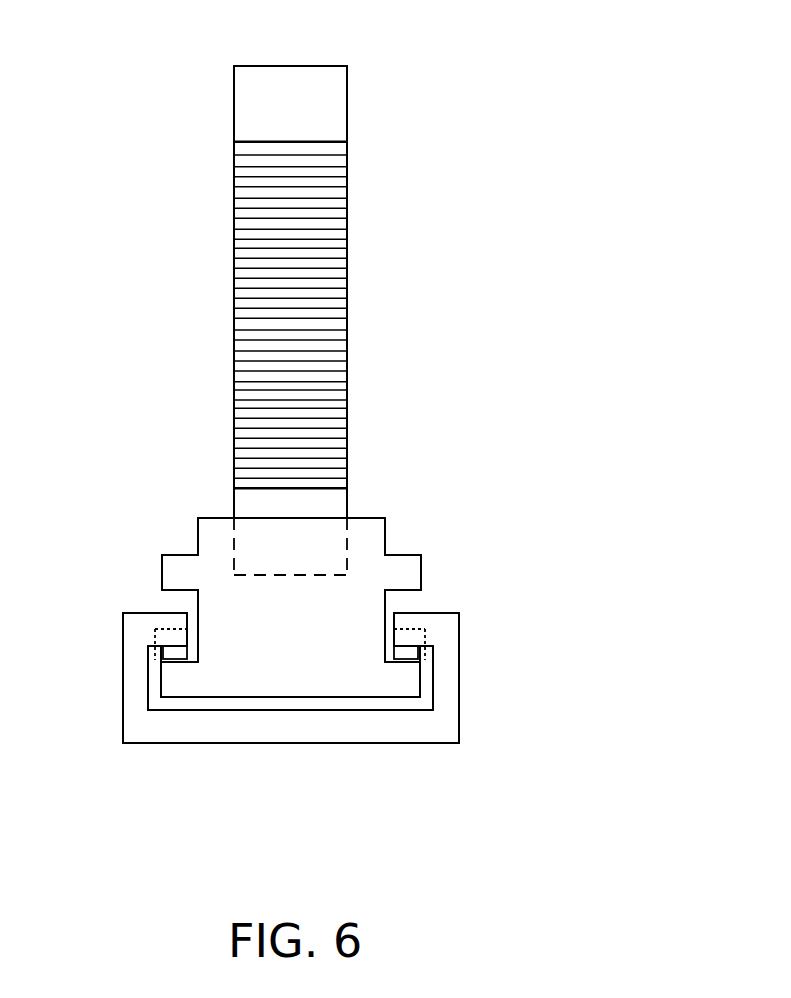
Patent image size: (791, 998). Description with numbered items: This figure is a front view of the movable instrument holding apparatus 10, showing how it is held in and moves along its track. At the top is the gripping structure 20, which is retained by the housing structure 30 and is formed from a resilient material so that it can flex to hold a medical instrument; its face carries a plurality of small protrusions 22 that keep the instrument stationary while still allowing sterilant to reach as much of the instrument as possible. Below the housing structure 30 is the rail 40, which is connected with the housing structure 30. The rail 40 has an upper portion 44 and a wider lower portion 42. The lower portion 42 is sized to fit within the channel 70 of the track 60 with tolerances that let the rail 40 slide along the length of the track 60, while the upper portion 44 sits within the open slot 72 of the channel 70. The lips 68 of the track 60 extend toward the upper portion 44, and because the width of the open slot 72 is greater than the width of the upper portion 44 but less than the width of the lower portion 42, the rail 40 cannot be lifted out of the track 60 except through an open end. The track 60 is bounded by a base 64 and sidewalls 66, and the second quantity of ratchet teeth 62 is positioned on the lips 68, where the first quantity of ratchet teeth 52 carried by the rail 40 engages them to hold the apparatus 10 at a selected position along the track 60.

The movable instrument holding apparatus 10 is at (427, 35).
The gripping structure 20 is at (262, 103).
The small protrusions 22 is at (305, 218).
The housing structure 30 is at (403, 575).
The rail 40 is at (308, 663).
The lower portion of the rail 42 is at (185, 684).
The upper portion of the rail 44 is at (232, 603).
The first quantity of ratchet teeth 52 is at (170, 655).
The track 60 is at (480, 712).
The second quantity of ratchet teeth 62 is at (412, 637).
The base of the track 64 is at (290, 735).
The sidewall of the track 66 is at (132, 702).
The lips of the track 68 is at (155, 612).
The channel of the track 70 is at (357, 700).
The open slot of the channel 72 is at (388, 613).